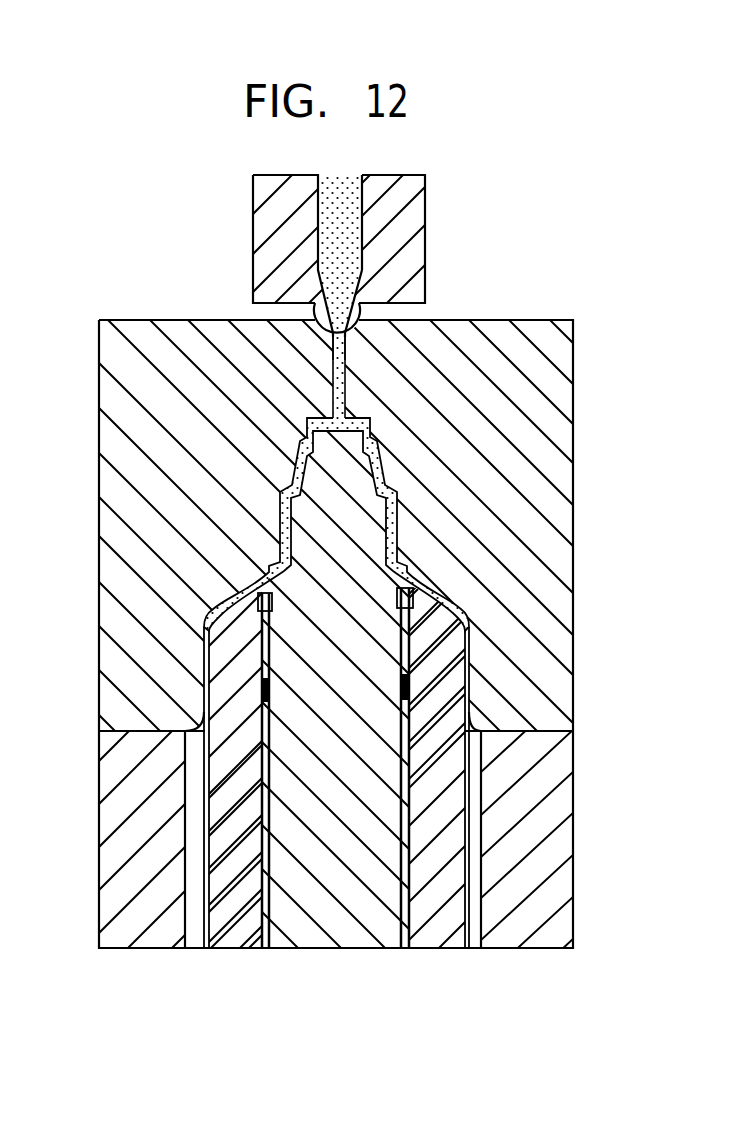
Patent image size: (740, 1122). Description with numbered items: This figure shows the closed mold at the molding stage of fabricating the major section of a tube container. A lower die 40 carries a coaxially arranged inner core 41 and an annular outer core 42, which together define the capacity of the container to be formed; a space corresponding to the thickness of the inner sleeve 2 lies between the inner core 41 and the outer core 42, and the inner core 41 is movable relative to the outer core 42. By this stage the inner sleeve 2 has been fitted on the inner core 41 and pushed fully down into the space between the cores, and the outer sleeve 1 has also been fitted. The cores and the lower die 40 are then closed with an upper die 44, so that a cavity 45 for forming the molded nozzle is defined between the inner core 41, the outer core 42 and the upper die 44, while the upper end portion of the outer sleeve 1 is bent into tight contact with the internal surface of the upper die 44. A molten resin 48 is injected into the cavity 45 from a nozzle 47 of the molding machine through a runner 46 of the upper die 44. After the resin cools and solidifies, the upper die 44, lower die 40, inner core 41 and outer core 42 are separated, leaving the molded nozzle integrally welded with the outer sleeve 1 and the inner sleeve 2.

The outer sleeve 1 is at (203, 798).
The inner sleeve 2 is at (267, 650).
The lower die 40 is at (548, 808).
The inner core 41 is at (355, 675).
The outer core 42 is at (443, 712).
The upper die 44 is at (532, 580).
The cavity 45 is at (413, 575).
The runner 46 is at (333, 360).
The nozzle 47 is at (267, 232).
The molten resin 48 is at (340, 397).